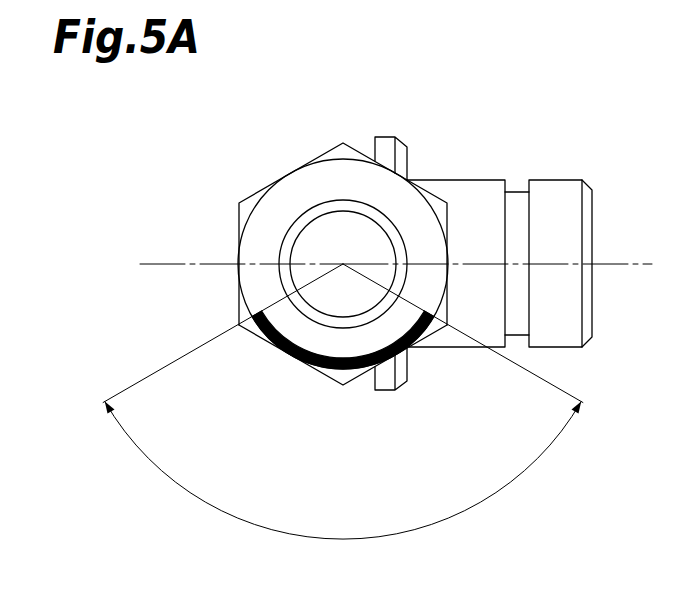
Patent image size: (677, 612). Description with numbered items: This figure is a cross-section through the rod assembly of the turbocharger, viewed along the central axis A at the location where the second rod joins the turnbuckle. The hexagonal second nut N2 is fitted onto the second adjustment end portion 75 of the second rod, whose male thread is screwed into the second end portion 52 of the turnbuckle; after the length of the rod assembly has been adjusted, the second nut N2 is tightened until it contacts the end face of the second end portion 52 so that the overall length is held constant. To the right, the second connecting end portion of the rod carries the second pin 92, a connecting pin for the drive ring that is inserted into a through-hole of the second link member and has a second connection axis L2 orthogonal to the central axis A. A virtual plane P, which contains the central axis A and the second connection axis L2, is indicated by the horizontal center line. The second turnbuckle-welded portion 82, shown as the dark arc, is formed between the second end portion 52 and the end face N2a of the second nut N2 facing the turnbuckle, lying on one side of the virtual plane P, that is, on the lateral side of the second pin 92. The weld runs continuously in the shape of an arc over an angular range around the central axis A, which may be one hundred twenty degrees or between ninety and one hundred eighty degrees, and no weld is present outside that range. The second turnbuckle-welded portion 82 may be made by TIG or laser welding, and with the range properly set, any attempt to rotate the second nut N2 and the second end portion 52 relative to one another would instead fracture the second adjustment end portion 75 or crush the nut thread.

The central axis A is at (343, 264).
The second adjustment end portion 75 is at (362, 233).
The second end portion 52 is at (405, 213).
The second pin 92 is at (560, 180).
The virtual plane P is at (171, 263).
The second connection axis L2 is at (626, 263).
The second nut N2 is at (226, 292).
The second turnbuckle-welded portion 82 is at (284, 357).
The end face of the second nut N2a is at (345, 373).